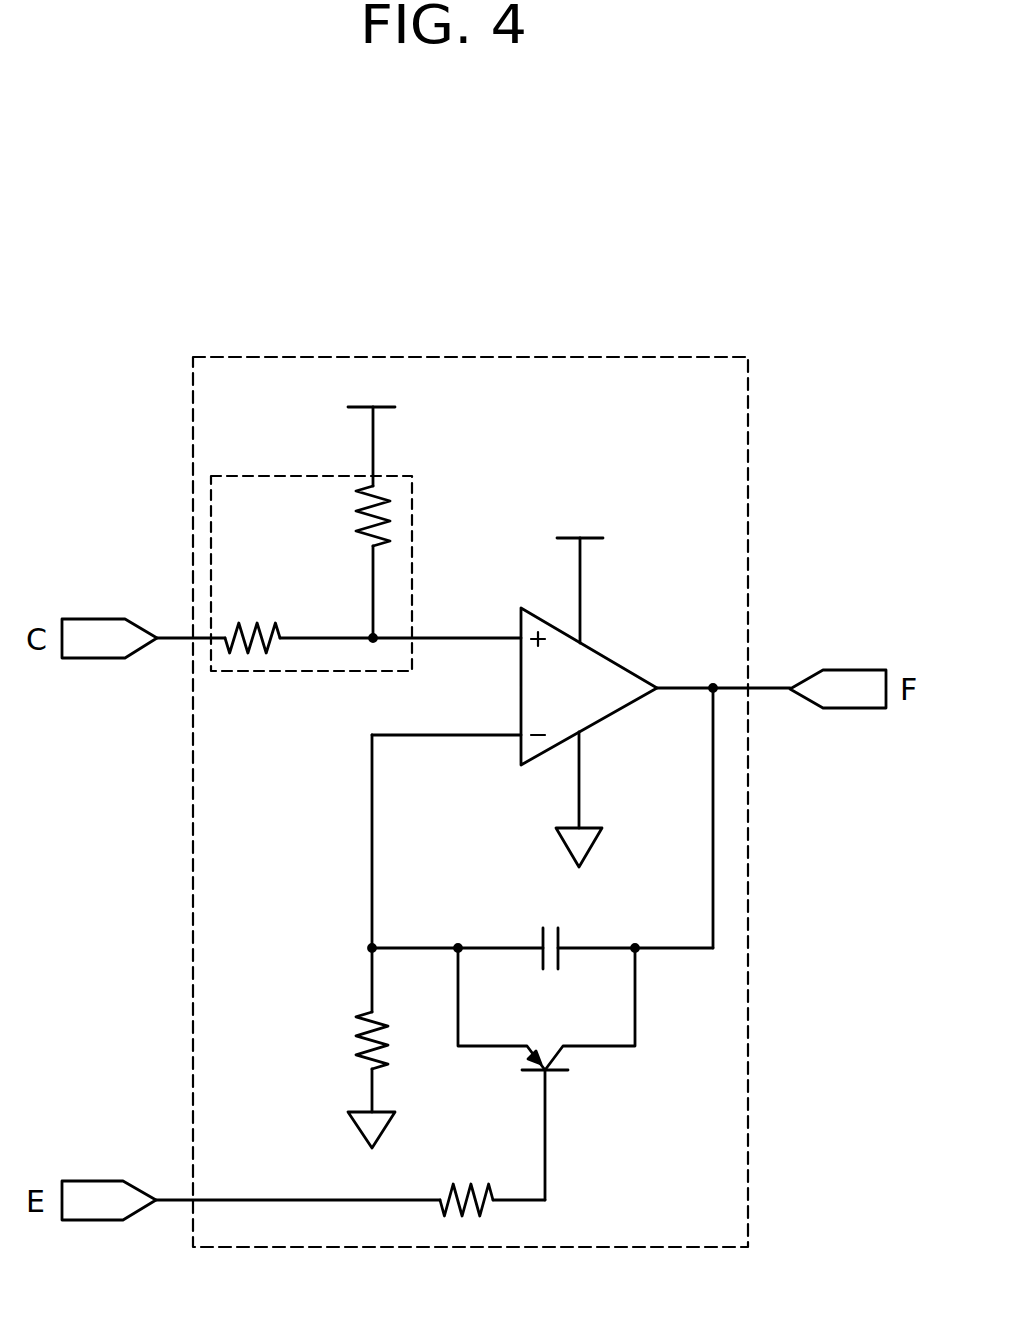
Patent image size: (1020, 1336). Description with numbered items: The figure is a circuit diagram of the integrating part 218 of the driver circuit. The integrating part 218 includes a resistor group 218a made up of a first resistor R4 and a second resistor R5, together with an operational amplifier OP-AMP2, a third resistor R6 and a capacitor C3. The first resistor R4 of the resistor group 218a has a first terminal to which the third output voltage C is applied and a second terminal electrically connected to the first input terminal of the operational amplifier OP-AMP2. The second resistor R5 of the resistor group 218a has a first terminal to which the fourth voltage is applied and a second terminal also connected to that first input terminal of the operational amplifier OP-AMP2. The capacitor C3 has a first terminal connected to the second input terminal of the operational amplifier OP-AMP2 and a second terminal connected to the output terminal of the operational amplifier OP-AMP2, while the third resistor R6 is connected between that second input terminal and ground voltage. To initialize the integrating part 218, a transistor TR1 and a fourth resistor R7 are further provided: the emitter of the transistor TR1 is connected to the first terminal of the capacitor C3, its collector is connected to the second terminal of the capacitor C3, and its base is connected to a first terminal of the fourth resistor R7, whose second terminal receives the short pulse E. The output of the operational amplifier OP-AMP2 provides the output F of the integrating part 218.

The integrating part 218 is at (748, 512).
The resistor group 218a is at (412, 497).
The first resistor R4 is at (252, 619).
The second resistor R5 is at (355, 516).
The third resistor R6 is at (354, 1040).
The fourth resistor R7 is at (466, 1184).
The capacitor C3 is at (552, 932).
The transistor TR1 is at (546, 1074).
The operational amplifier OP-AMP2 is at (616, 686).